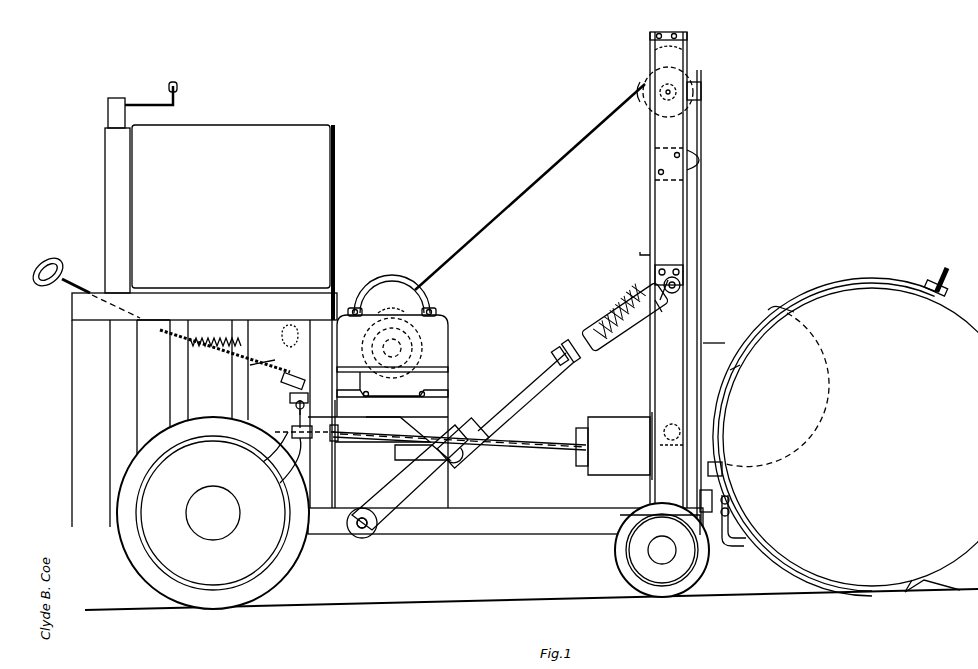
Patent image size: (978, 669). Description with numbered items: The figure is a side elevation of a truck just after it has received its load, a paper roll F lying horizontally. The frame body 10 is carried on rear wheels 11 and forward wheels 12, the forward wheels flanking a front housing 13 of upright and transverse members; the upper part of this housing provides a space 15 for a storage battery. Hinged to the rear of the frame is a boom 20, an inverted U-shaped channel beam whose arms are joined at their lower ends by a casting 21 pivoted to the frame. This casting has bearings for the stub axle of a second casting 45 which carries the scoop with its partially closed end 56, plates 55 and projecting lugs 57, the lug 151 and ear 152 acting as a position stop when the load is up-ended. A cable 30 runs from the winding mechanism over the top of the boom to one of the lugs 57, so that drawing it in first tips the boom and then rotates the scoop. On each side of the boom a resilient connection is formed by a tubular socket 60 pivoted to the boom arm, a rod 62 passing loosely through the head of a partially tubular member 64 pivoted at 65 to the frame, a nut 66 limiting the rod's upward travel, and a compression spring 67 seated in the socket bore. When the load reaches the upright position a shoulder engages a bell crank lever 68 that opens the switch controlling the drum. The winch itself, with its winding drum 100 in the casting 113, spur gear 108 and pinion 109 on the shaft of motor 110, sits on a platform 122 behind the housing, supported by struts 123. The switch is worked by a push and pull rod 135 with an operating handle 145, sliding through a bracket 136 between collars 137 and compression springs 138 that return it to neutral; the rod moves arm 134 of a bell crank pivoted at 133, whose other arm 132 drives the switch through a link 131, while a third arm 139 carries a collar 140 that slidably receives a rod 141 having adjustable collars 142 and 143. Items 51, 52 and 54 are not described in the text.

The frame body 10 is at (516, 510).
The rear wheels 11 is at (614, 566).
The forward wheels 12 is at (285, 566).
The front housing 13 is at (175, 400).
The battery space 15 is at (219, 201).
The boom 20 is at (660, 205).
The casting 21 is at (612, 478).
The cable 30 is at (505, 208).
The second casting 45 is at (735, 507).
The pivot pin 51 is at (648, 320).
The wheel chock 52 is at (878, 588).
The pivot link 54 is at (641, 337).
The plates 55 is at (738, 553).
The partially closed end 56 is at (826, 402).
The lugs 57 is at (722, 478).
The tubular sockets 60 is at (628, 308).
The rods 62 is at (528, 383).
The partially tubular members 64 is at (390, 478).
The pivot 65 is at (365, 530).
The nuts 66 is at (460, 462).
The compression springs 67 is at (590, 372).
The bell crank lever 68 is at (680, 420).
The winding drum 100 is at (394, 348).
The spur gear 108 is at (364, 382).
The pinion 109 is at (430, 300).
The motor 110 is at (392, 275).
The casting of the winding mechanism 113 is at (442, 345).
The platform 122 is at (370, 415).
The struts 123 is at (428, 451).
The link 131 is at (278, 384).
The bell crank arm 132 is at (298, 410).
The bell crank pivot 133 is at (305, 404).
The bell crank arm 134 is at (279, 402).
The push and pull rod 135 is at (165, 335).
The bracket 136 is at (249, 359).
The collars 137 is at (210, 324).
The compression springs 138 is at (234, 383).
The third arm 139 is at (290, 432).
The collar 140 is at (277, 463).
The rod 141 is at (537, 450).
The collar 142 is at (265, 453).
The collar 143 is at (340, 445).
The operating handle 145 is at (66, 260).
The lug 151 is at (722, 350).
The ear 152 is at (699, 162).
The drum F is at (850, 437).